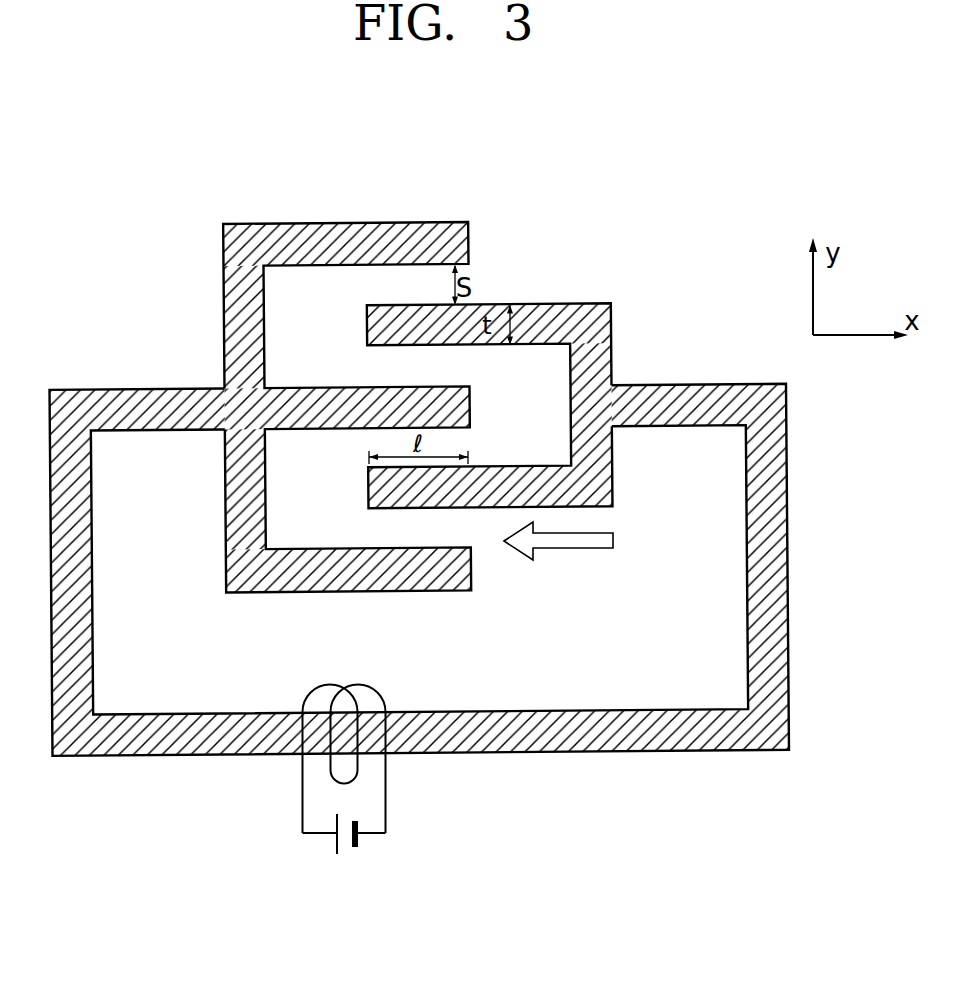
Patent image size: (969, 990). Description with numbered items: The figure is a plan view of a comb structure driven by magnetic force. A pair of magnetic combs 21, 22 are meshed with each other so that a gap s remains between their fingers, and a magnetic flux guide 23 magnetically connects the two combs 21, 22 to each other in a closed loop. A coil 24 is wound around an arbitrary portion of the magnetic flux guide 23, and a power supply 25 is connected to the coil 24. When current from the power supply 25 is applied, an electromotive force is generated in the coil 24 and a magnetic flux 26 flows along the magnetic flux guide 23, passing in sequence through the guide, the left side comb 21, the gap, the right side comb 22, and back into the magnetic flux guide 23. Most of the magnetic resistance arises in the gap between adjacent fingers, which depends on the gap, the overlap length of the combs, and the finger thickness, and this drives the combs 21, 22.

The magnetic comb 21 is at (337, 238).
The magnetic comb 22 is at (540, 318).
The magnetic flux guide 23 is at (787, 588).
The coil 24 is at (343, 767).
The power supply 25 is at (357, 848).
The magnetic flux 26 is at (613, 541).